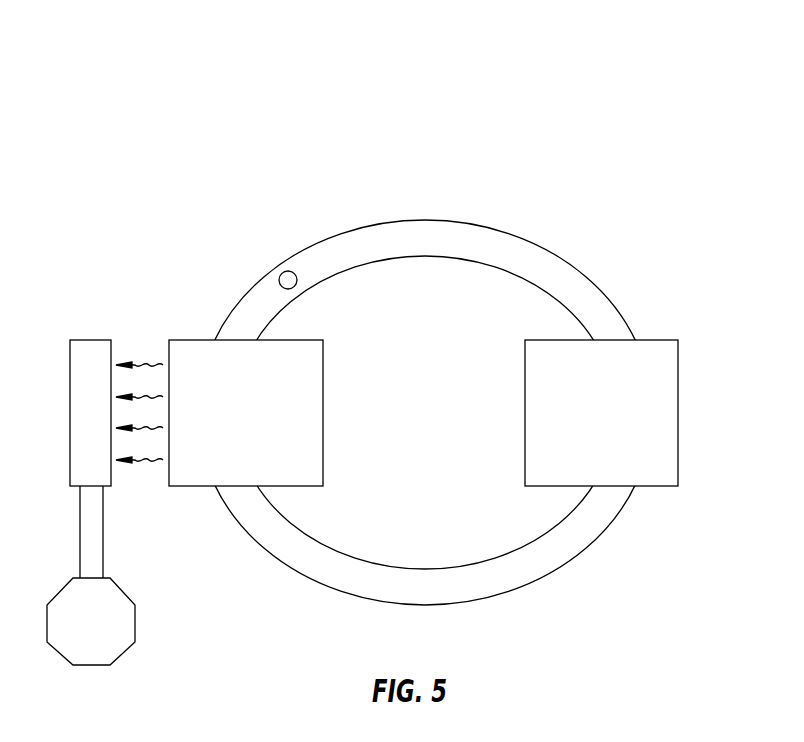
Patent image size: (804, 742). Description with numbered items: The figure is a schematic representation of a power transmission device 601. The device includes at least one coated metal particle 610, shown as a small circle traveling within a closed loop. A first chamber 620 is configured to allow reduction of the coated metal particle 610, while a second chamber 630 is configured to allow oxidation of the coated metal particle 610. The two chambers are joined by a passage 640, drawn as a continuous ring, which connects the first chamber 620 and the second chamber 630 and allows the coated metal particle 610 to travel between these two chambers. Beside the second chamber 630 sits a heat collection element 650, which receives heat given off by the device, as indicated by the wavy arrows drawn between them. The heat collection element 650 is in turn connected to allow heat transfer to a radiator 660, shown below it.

The power transmission device 601 is at (575, 60).
The coated metal particle 610 is at (287, 272).
The first chamber 620 is at (662, 345).
The second chamber 630 is at (186, 344).
The passage 640 is at (467, 221).
The heat collection element 650 is at (90, 344).
The radiator 660 is at (122, 614).